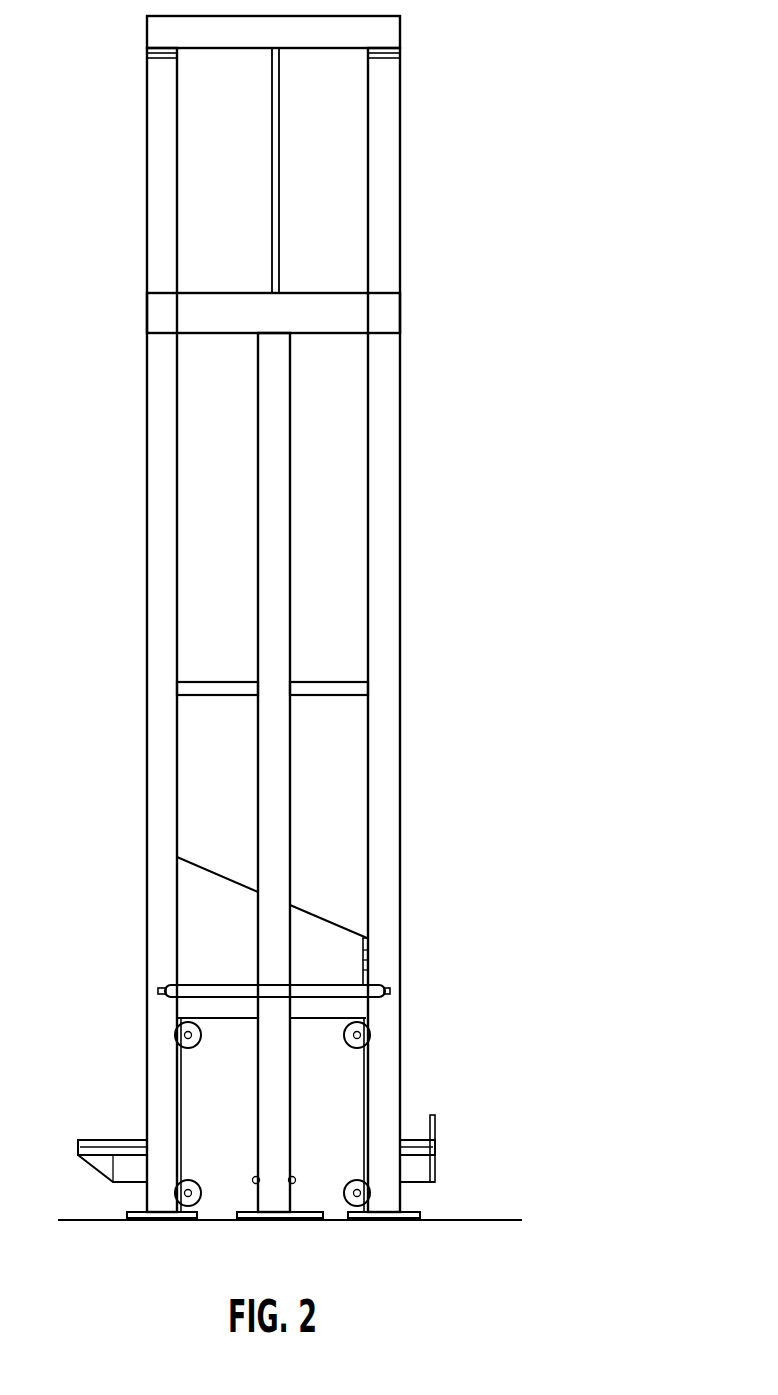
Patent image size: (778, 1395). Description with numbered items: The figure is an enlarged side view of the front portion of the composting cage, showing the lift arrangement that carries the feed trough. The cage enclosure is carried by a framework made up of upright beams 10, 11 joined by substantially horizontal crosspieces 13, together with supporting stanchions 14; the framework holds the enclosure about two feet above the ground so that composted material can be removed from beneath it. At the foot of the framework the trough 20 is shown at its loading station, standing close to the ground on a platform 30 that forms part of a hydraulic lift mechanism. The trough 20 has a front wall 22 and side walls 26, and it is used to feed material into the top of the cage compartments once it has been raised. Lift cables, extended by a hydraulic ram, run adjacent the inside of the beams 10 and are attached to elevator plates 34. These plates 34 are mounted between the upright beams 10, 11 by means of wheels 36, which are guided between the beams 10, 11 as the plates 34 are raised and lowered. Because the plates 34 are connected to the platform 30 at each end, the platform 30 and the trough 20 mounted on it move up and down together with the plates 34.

The upright beam 10 is at (390, 525).
The upright beam 11 is at (161, 528).
The horizontal crosspiece 13 is at (339, 38).
The supporting stanchion 14 is at (272, 532).
The trough 20 is at (323, 912).
The front wall 22 is at (372, 962).
The side wall 26 is at (230, 945).
The platform 30 is at (105, 1140).
The elevator plate 34 is at (350, 1100).
The wheel 36 is at (198, 1040).